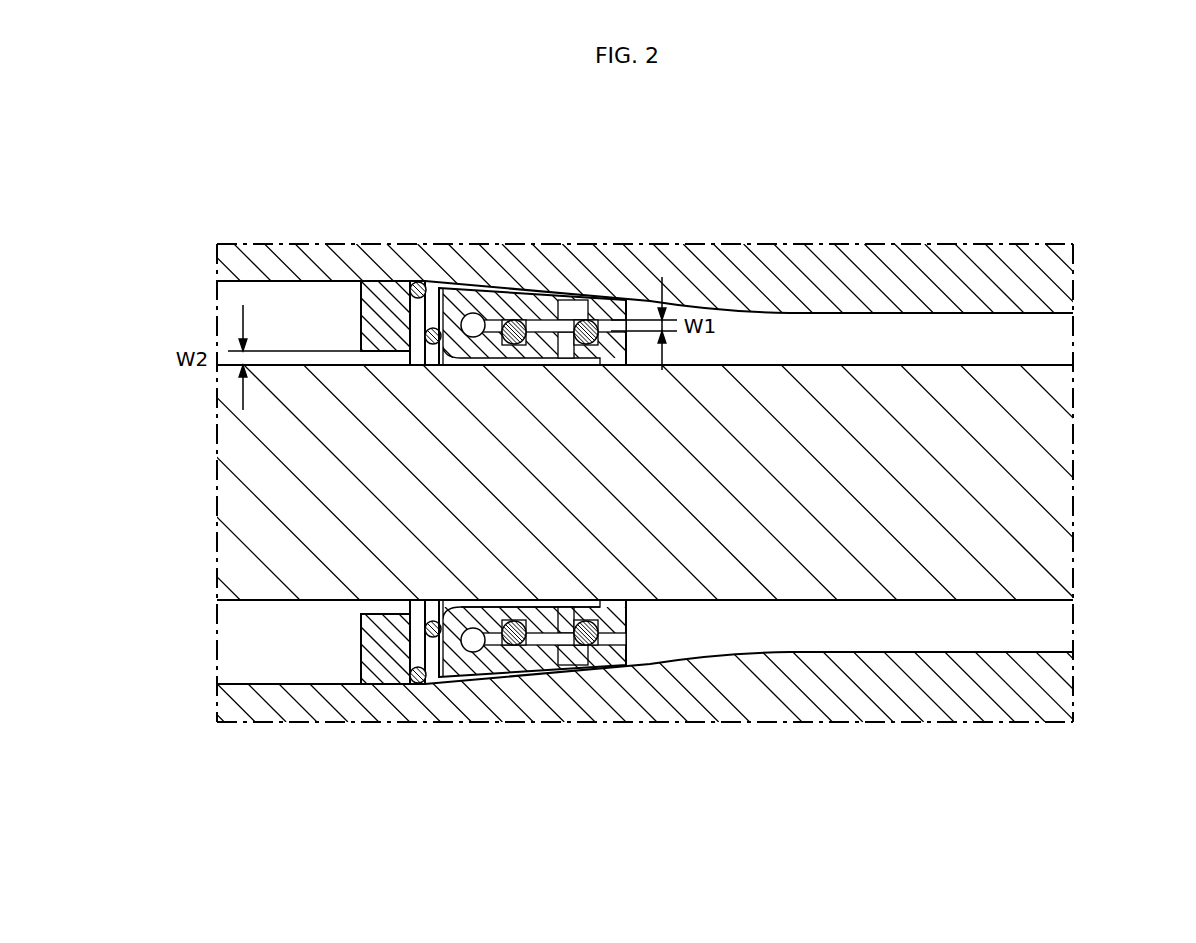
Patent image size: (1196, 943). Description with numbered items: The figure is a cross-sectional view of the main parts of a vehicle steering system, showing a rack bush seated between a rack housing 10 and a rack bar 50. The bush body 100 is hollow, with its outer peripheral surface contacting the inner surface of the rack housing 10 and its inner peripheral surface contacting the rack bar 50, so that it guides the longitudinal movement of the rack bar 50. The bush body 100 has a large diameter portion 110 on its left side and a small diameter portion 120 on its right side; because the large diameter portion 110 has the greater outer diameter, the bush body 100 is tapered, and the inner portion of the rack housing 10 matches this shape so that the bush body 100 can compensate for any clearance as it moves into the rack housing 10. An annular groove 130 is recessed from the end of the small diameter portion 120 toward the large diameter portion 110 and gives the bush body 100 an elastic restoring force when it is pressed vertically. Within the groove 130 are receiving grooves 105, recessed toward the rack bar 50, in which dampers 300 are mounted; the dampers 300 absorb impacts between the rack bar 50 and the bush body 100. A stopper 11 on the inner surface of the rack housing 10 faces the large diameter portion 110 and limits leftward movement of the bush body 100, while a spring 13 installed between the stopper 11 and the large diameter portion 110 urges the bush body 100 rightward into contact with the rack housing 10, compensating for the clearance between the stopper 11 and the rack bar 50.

The rack housing 10 is at (721, 705).
The stopper 11 is at (377, 665).
The spring 13 is at (423, 680).
The rack bar 50 is at (1040, 480).
The bush body 100 is at (440, 147).
The receiving groove 105 is at (417, 283).
The large diameter portion 110 is at (440, 288).
The small diameter portion 120 is at (623, 328).
The groove 130 is at (645, 318).
The damper 300 is at (595, 662).